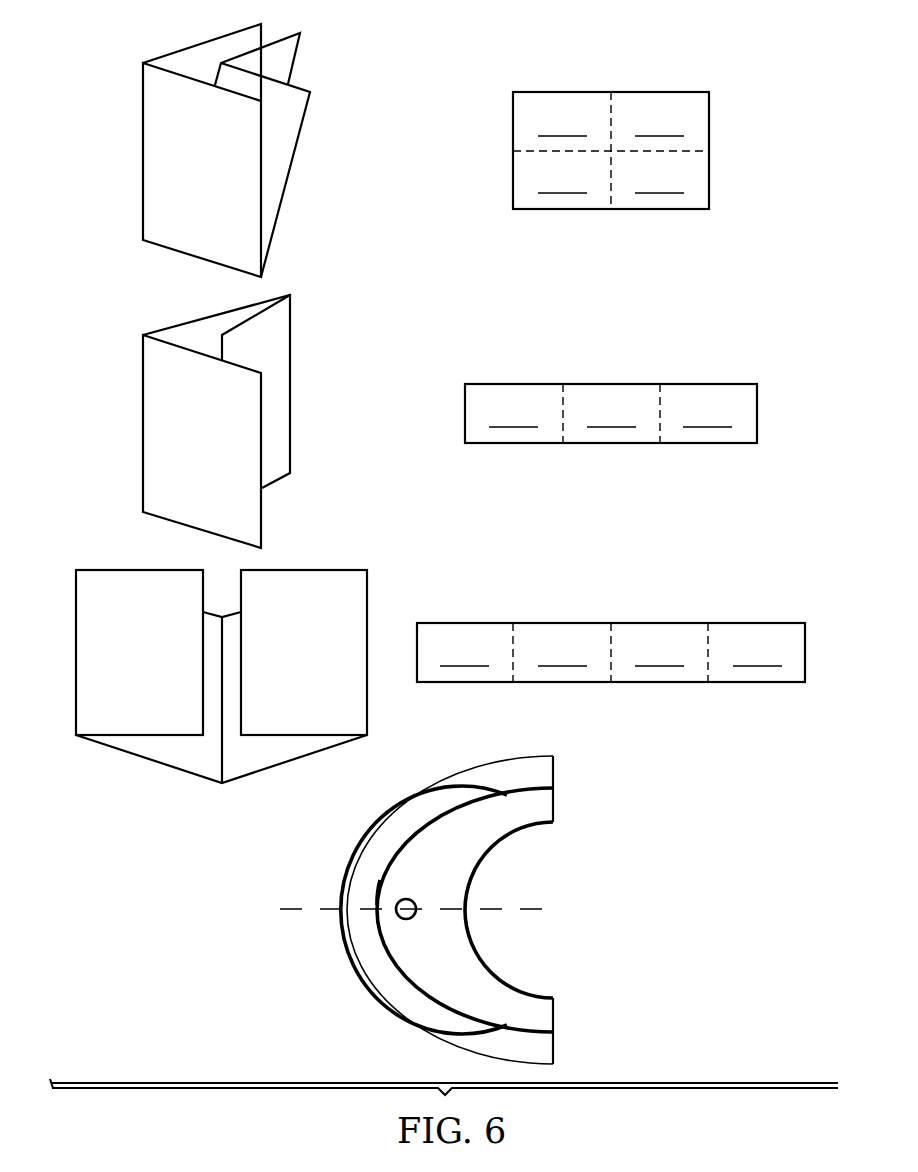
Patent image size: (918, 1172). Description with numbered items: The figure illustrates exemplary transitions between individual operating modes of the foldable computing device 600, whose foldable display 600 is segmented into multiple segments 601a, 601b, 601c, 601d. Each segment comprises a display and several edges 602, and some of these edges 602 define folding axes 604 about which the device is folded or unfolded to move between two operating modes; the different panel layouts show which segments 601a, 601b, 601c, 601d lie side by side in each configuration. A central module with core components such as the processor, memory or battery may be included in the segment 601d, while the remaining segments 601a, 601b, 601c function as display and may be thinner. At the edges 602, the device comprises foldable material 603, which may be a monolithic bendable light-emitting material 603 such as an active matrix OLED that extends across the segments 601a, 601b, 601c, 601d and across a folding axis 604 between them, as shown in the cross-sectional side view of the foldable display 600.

The foldable computing device 600 is at (134, 149).
The segment 601a is at (513, 388).
The segment 601b is at (683, 388).
The segment 601c is at (660, 417).
The segment including the central module 601d is at (611, 417).
The edge 602 is at (612, 105).
The foldable material 603 is at (380, 878).
The folding axis 604 is at (397, 915).